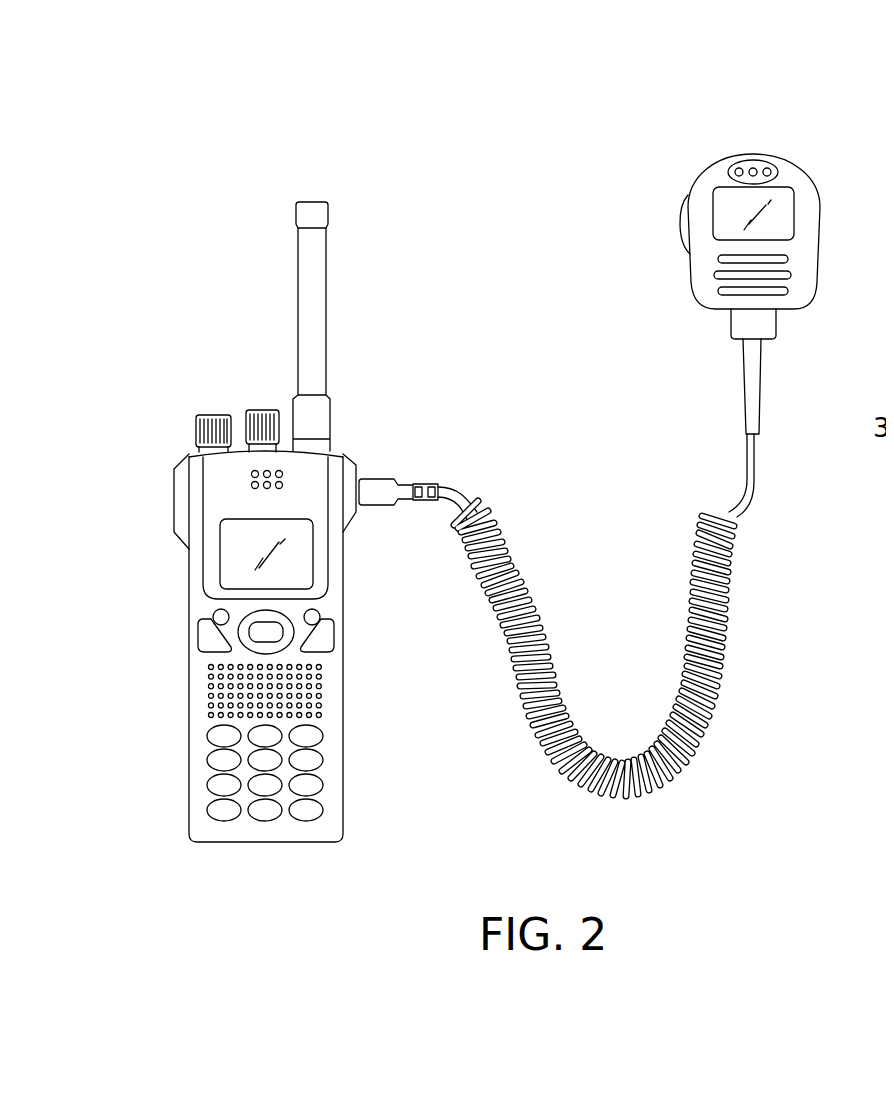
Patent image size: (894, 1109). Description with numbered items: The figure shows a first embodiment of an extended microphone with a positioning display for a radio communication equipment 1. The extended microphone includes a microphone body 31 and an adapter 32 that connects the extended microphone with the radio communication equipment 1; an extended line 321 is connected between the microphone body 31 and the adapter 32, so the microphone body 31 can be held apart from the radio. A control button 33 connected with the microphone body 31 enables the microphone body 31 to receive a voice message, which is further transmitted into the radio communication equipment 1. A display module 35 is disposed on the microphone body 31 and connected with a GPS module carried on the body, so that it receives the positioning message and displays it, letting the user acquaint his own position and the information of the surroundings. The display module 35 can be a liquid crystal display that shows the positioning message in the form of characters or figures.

The radio communication equipment 1 is at (332, 768).
The microphone body 31 is at (753, 160).
The adapter 32 is at (372, 485).
The extended line 321 is at (727, 615).
The control button 33 is at (683, 211).
The display module 35 is at (722, 227).